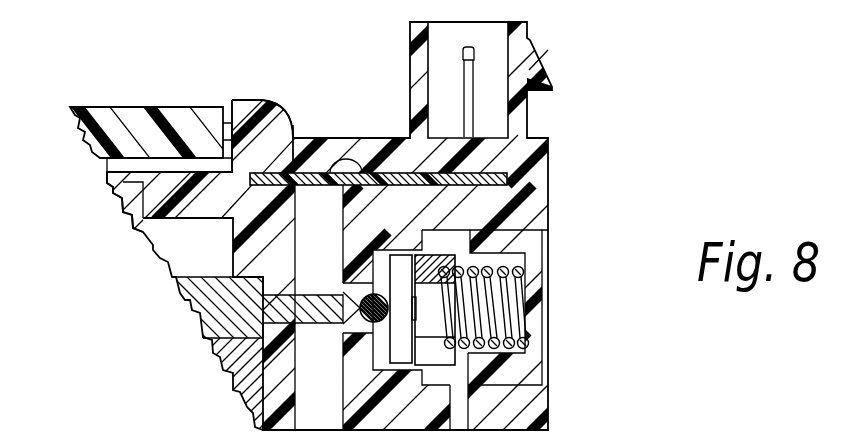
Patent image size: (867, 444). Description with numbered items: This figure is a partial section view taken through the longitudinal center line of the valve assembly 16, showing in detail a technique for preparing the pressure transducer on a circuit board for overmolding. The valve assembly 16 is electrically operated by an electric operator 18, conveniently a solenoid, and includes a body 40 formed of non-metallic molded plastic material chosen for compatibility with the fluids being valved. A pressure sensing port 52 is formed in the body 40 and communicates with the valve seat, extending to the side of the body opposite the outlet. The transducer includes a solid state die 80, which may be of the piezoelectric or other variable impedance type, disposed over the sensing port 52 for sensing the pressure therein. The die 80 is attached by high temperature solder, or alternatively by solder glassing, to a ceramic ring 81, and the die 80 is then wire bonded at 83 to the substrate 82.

The valve assembly 16 is at (566, 282).
The electric operator 18 is at (123, 90).
The body 40 is at (549, 208).
The pressure sensing port 52 is at (343, 229).
The die 80 is at (320, 173).
The ceramic ring 81 is at (278, 173).
The substrate 82 is at (487, 158).
The wire bond 83 is at (370, 173).